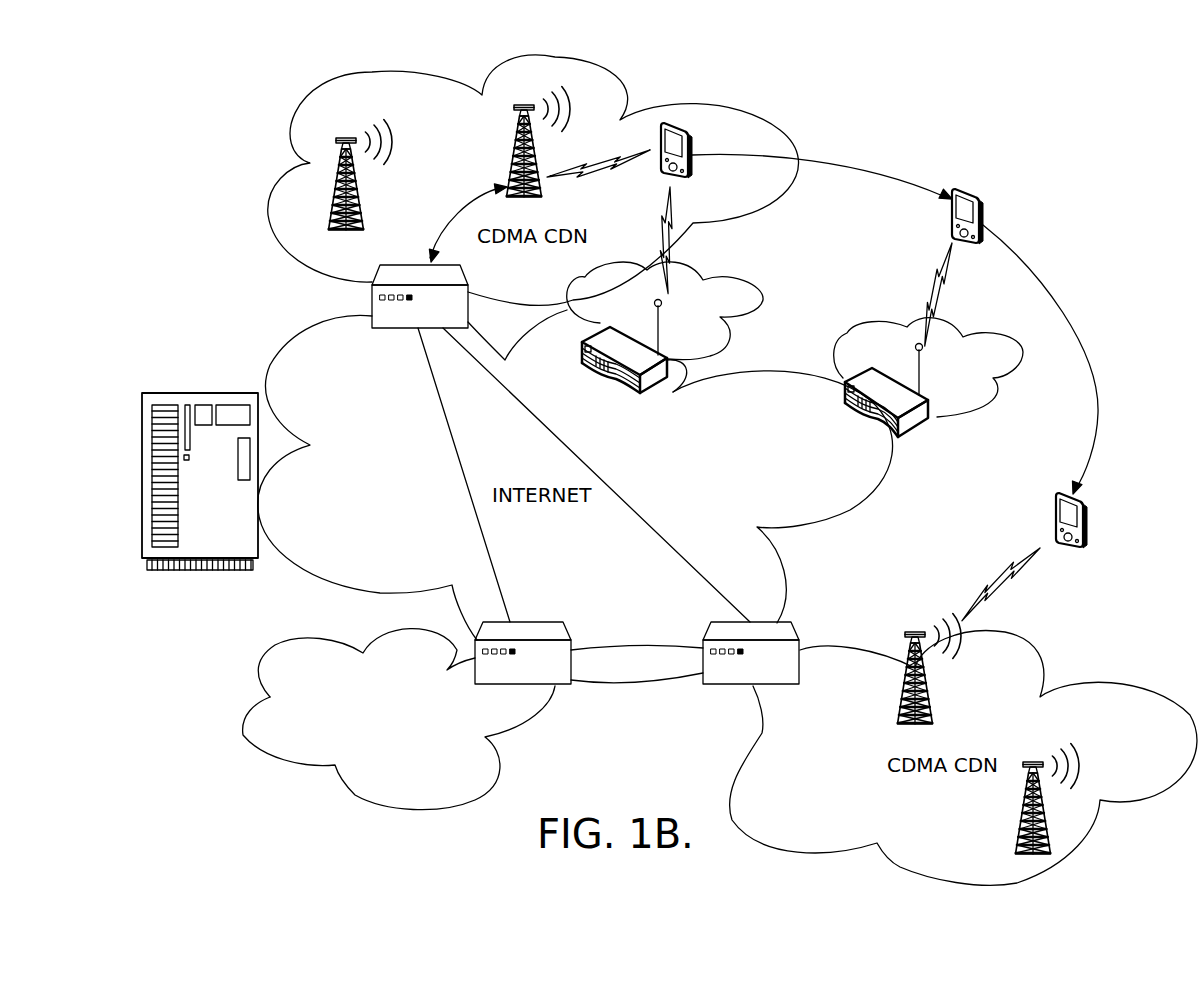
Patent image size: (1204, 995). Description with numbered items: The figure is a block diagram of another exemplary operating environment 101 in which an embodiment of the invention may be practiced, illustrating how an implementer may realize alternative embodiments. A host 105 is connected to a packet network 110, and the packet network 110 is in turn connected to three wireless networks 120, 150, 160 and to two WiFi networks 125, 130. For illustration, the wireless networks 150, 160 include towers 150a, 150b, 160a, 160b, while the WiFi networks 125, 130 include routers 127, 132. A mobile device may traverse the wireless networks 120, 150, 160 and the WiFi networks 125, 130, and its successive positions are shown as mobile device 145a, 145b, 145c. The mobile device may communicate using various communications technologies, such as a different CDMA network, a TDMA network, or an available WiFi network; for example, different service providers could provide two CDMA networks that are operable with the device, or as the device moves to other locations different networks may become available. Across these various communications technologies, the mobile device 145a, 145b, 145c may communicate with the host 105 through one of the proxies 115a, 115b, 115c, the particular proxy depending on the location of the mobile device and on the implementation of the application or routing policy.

The operating environment 101 is at (257, 800).
The host 105 is at (210, 570).
The packet network 110 is at (328, 324).
The proxy 115a is at (392, 330).
The proxy 115b is at (560, 686).
The proxy 115c is at (726, 687).
The wireless network 120 is at (440, 810).
The WiFi network 125 is at (766, 293).
The router 127 is at (615, 392).
The WiFi network 130 is at (977, 415).
The router 132 is at (918, 437).
The mobile device 145a is at (680, 123).
The mobile device 145b is at (968, 192).
The mobile device 145c is at (1087, 533).
The wireless network 150 is at (1142, 802).
The tower 150a is at (932, 700).
The tower 150b is at (1020, 820).
The wireless network 160 is at (399, 70).
The tower 160a is at (362, 198).
The tower 160b is at (510, 157).